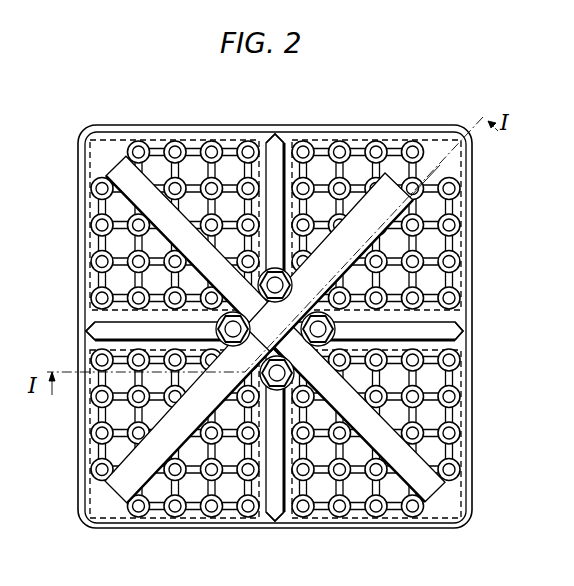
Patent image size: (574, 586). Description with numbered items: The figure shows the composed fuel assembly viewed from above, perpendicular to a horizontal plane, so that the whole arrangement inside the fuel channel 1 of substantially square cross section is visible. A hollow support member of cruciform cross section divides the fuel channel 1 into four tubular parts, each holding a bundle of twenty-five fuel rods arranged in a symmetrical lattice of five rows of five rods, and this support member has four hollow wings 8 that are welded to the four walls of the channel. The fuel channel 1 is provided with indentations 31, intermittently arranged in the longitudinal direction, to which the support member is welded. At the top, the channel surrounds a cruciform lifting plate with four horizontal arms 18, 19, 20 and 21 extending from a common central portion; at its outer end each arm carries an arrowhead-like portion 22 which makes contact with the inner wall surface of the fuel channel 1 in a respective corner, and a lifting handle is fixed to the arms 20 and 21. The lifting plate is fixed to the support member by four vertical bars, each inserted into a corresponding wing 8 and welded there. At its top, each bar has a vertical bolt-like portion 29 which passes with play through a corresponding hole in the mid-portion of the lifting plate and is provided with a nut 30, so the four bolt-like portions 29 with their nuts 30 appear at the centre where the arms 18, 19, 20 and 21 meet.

The fuel channel 1 is at (470, 357).
The hollow wings 8 is at (277, 142).
The horizontal arm 18 is at (413, 463).
The horizontal arm 19 is at (138, 193).
The horizontal arm 20 is at (160, 505).
The horizontal arm 21 is at (423, 193).
The arrowhead-like portion 22 is at (102, 512).
The bolt-like portion 29 is at (313, 322).
The nut 30 is at (291, 368).
The indentations 31 is at (103, 332).